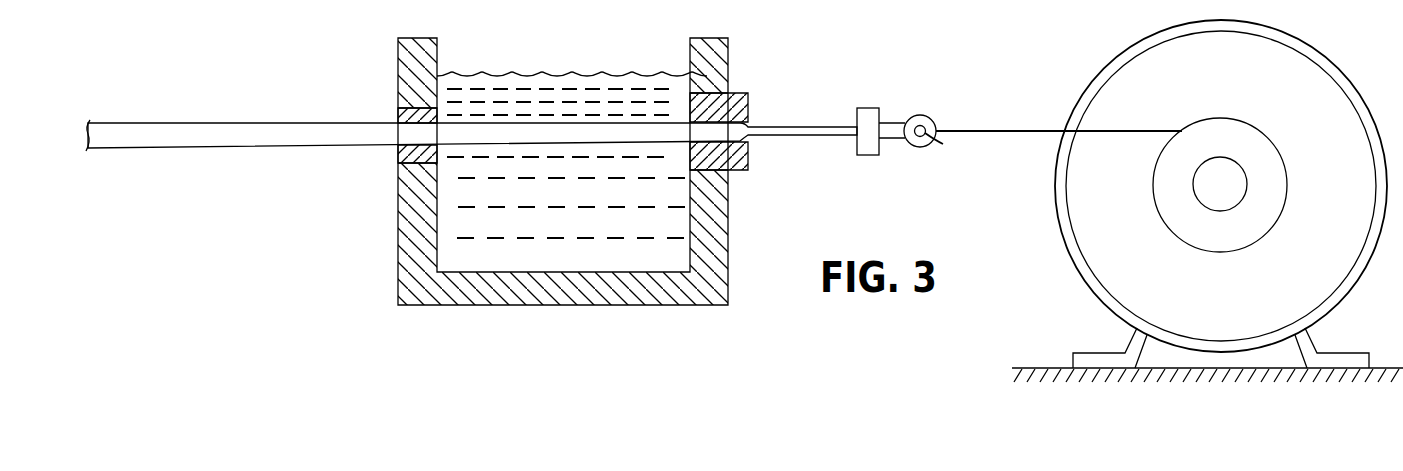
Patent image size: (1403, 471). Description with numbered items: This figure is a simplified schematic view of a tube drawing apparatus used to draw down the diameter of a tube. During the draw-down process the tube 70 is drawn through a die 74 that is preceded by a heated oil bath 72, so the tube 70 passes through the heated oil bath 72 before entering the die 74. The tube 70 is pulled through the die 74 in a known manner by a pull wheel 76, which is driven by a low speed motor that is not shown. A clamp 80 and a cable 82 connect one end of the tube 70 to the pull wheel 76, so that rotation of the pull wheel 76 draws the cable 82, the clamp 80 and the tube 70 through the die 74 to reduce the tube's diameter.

The tube 70 is at (295, 123).
The heated oil bath 72 is at (578, 75).
The die 74 is at (742, 93).
The pull wheel 76 is at (1290, 35).
The clamp 80 is at (865, 108).
The cable 82 is at (957, 127).